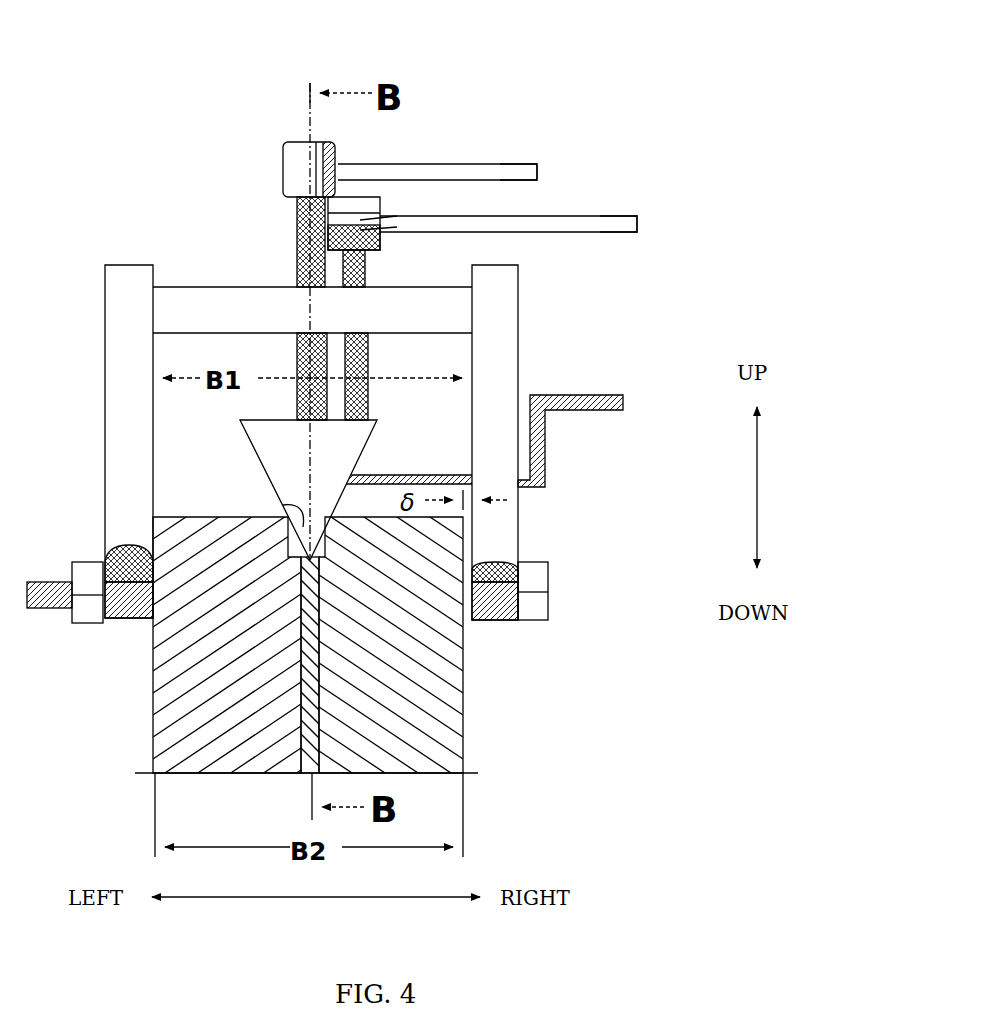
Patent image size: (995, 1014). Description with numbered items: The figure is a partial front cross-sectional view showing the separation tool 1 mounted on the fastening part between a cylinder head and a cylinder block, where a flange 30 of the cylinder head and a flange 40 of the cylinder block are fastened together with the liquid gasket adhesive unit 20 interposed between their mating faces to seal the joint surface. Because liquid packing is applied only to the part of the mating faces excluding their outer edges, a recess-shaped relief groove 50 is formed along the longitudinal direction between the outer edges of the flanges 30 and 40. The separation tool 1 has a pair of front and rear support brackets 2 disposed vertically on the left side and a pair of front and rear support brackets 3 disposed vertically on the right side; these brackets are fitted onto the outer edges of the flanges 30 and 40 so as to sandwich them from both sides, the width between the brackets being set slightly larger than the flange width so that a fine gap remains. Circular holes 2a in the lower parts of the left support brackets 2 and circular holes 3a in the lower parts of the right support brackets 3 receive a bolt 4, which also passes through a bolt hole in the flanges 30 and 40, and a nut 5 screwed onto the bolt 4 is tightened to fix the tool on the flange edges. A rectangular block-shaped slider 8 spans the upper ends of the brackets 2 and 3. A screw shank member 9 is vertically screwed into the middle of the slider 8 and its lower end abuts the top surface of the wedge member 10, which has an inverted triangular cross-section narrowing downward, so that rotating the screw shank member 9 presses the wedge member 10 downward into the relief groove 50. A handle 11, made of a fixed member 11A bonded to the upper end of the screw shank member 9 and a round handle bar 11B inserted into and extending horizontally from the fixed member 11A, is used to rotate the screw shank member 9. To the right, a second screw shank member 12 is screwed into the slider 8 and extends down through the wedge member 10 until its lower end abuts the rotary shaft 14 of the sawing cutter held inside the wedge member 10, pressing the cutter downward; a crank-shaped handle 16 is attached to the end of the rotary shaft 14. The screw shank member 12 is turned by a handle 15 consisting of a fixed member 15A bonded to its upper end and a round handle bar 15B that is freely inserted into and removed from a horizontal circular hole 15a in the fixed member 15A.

The separation tool 1 is at (140, 160).
The front and rear support brackets 2 is at (107, 350).
The circular holes 2a is at (123, 607).
The front and rear support brackets 3 is at (500, 340).
The circular holes 3a is at (520, 577).
The bolts 4 is at (548, 605).
The nut 5 is at (75, 562).
The slider 8 is at (433, 287).
The screw shank member 9 is at (297, 262).
The wedge member 10 is at (258, 468).
The handle 11 is at (420, 163).
The fixed member 11A is at (283, 162).
The handle bar 11B is at (508, 165).
The screw shank member 12 is at (369, 352).
The rotary shaft 14 is at (416, 475).
The handle 15 is at (578, 216).
The fixed member 15A is at (363, 197).
The circular hole 15a is at (366, 231).
The handle bar 15B is at (605, 234).
The handle 16 is at (590, 395).
The liquid gasket adhesive unit 20 is at (268, 773).
The flange 30 is at (153, 703).
The flange 40 is at (465, 698).
The relief groove 50 is at (283, 505).